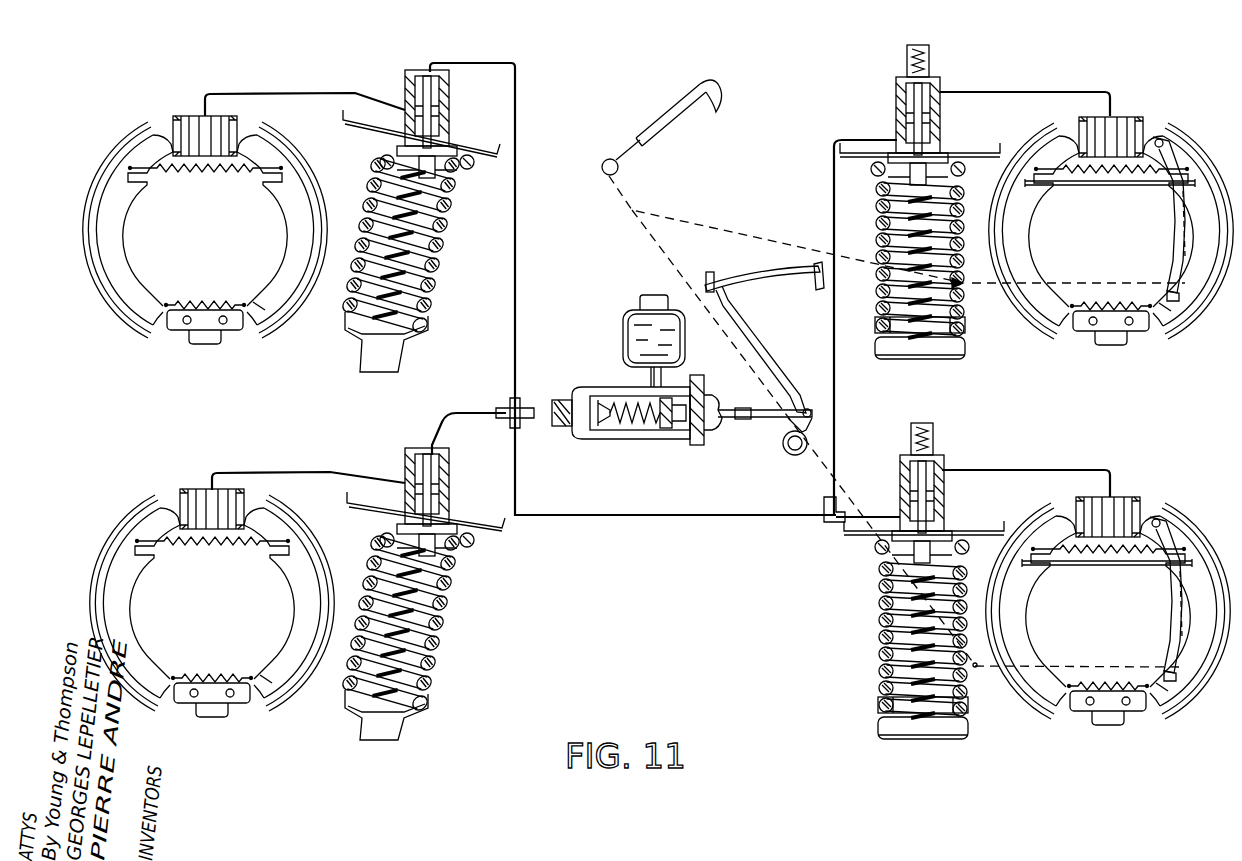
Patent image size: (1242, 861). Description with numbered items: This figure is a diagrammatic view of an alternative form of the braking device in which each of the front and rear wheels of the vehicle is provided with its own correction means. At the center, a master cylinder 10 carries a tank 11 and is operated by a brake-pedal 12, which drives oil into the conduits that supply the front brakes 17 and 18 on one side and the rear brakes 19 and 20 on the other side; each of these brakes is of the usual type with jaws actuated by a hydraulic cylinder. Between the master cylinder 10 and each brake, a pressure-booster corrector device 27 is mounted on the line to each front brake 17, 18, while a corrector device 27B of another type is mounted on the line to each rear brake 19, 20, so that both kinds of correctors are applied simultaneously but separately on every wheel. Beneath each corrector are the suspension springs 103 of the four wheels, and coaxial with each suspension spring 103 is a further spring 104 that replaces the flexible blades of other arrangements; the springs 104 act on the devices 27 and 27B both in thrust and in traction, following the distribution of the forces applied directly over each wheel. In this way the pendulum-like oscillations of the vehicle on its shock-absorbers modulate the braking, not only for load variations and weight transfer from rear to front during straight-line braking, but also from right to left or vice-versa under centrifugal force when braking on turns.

The master cylinder 10 is at (631, 438).
The tank 11 is at (623, 336).
The brake-pedal 12 is at (778, 276).
The front brake 17 is at (318, 182).
The front brake 18 is at (329, 563).
The rear brake 19 is at (1204, 157).
The rear brake 20 is at (1200, 537).
The pressure-booster corrector device 27 is at (450, 100).
The corrector device 27B is at (897, 102).
The suspension spring 103 is at (448, 206).
The spring 104 is at (440, 260).